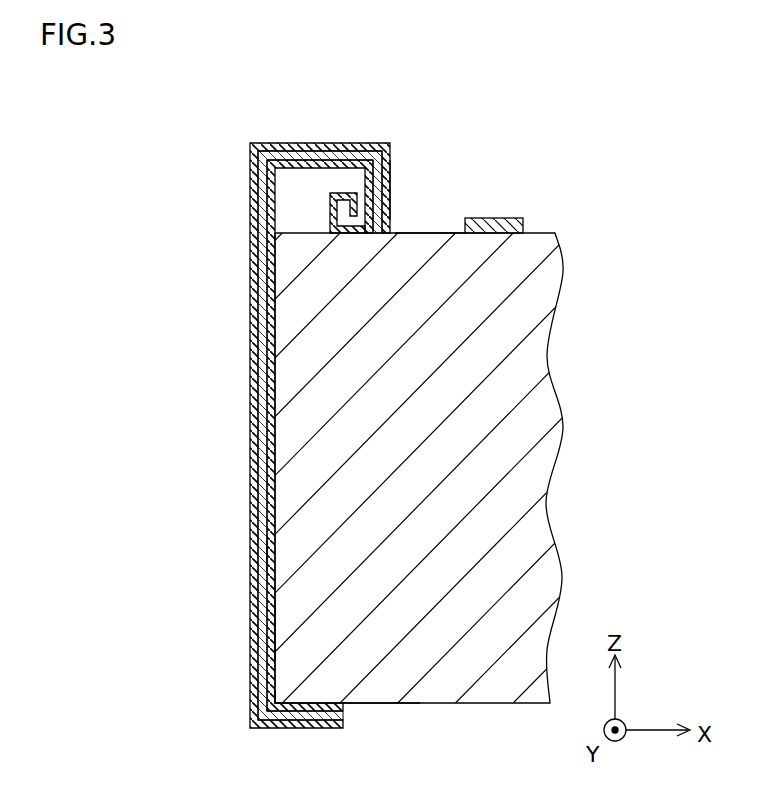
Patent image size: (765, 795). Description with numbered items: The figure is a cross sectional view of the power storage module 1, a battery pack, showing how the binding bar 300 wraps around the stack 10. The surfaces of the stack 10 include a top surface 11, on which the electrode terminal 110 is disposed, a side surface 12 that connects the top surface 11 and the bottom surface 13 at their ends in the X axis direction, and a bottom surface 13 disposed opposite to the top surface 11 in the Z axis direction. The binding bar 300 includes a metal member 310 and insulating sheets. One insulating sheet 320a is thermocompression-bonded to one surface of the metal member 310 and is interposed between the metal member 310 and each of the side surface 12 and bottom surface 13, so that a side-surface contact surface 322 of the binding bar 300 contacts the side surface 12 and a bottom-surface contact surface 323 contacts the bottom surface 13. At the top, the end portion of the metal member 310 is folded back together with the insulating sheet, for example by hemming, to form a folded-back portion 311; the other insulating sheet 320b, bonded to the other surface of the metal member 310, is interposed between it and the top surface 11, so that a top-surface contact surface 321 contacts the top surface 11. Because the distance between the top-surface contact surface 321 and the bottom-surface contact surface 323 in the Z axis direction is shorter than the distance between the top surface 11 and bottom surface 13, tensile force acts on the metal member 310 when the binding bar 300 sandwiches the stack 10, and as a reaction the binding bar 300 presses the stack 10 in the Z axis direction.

The power storage module 1 is at (247, 127).
The stack 10 is at (475, 688).
The top surface 11 is at (447, 231).
The side surface 12 is at (270, 626).
The bottom surface 13 is at (371, 706).
The electrode terminal 110 is at (493, 217).
The binding bar 300 is at (247, 380).
The metal member 310 is at (263, 455).
The folded-back portion 311 is at (400, 186).
The one insulating sheet 320a is at (273, 501).
The other insulating sheet 320b is at (252, 415).
The top-surface contact surface 321 is at (362, 249).
The side-surface contact surface 322 is at (286, 549).
The bottom-surface contact surface 323 is at (305, 702).